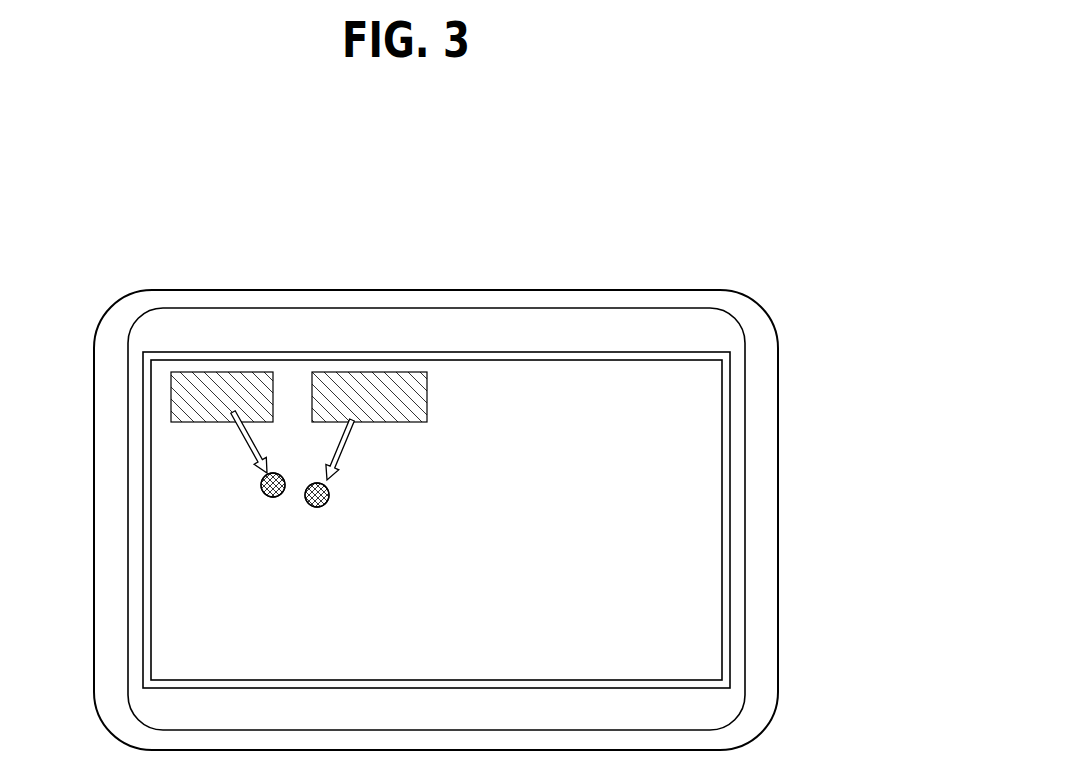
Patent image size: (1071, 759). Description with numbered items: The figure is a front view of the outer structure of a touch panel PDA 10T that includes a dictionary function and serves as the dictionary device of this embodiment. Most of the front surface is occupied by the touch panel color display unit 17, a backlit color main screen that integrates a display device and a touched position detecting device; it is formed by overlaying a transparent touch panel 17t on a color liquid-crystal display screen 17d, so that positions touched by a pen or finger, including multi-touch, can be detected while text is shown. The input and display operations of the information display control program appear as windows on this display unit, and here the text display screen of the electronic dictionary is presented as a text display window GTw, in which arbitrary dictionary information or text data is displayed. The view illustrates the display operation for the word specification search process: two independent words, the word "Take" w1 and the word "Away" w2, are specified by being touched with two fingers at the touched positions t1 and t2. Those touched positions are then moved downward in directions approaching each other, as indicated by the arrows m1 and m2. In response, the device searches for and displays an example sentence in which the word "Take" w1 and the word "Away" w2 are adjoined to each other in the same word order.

The touch panel PDA 10T is at (697, 238).
The touch panel color display unit 17 is at (436, 429).
The color liquid-crystal display screen 17d is at (455, 320).
The transparent touch panel 17t is at (427, 215).
The text display window GTw is at (590, 370).
The word "Take" w1 is at (213, 372).
The word "Away" w2 is at (368, 372).
The arrow m1 is at (262, 474).
The arrow m2 is at (310, 483).
The touched position t1 is at (264, 494).
The touched position t2 is at (310, 504).